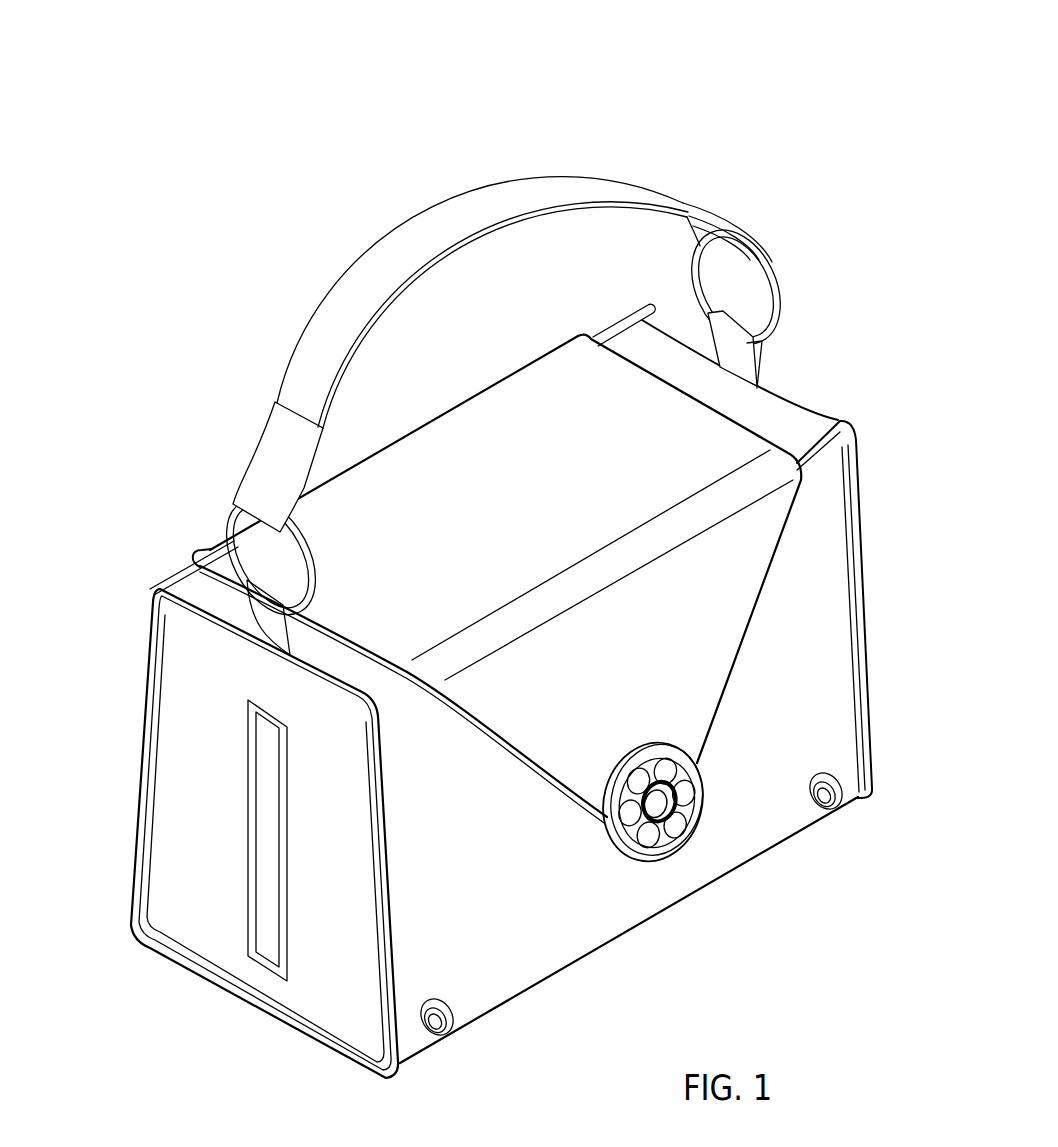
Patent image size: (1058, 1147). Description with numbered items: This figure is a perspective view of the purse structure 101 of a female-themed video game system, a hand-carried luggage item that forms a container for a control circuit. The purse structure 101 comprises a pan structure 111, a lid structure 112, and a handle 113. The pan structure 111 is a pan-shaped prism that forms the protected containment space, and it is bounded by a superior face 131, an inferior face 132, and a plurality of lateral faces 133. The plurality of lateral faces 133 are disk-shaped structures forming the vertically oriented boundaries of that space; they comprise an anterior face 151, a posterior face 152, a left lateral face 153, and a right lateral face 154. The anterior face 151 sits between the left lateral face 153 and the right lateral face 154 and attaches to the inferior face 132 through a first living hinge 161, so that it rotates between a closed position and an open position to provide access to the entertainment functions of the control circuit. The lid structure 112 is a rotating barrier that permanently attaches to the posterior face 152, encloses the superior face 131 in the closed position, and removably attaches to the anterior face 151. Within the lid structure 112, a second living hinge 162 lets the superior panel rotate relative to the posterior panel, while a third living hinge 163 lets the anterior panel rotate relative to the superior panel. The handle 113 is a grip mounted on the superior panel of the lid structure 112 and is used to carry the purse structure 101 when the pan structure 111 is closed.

The purse structure 101 is at (165, 68).
The pan structure 111 is at (103, 230).
The lid structure 112 is at (583, 437).
The handle 113 is at (489, 205).
The superior face 131 is at (832, 325).
The inferior face 132 is at (520, 1065).
The plurality of lateral faces 133 is at (213, 297).
The anterior face 151 is at (903, 600).
The posterior face 152 is at (122, 821).
The left lateral face 153 is at (900, 460).
The right lateral face 154 is at (247, 1078).
The first living hinge 161 is at (597, 950).
The second living hinge 162 is at (431, 410).
The third living hinge 163 is at (670, 533).